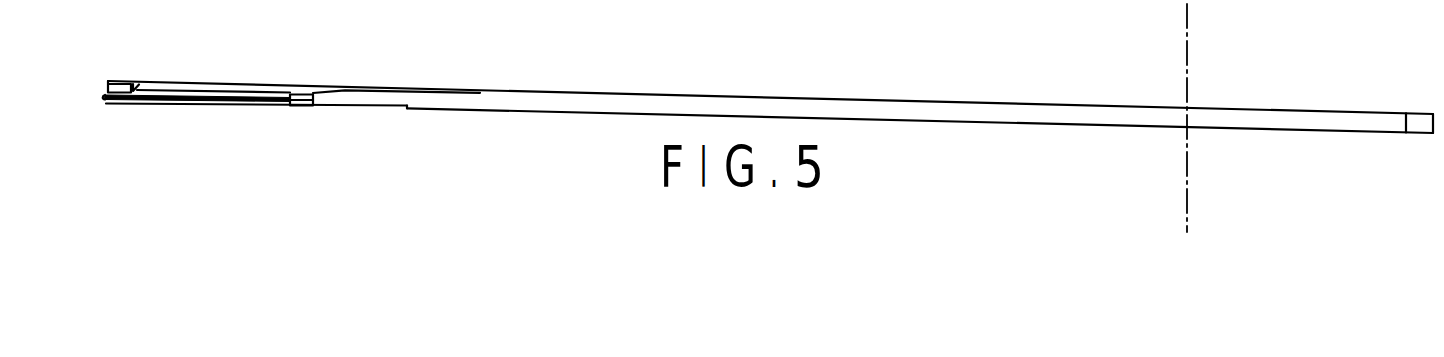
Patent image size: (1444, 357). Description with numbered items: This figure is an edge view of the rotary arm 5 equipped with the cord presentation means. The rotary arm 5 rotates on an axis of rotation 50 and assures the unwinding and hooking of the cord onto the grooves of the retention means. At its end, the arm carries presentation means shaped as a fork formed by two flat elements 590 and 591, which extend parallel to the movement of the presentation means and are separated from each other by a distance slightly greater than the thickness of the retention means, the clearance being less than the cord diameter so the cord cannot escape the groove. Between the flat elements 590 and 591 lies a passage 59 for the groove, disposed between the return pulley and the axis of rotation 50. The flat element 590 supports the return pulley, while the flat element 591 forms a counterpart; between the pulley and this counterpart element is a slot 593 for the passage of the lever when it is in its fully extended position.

The rotary arm 5 is at (895, 110).
The axis of rotation 50 is at (1188, 86).
The passage 59 is at (223, 95).
The flat element 590 is at (223, 95).
The flat element 591 is at (234, 106).
The slot 593 is at (104, 101).